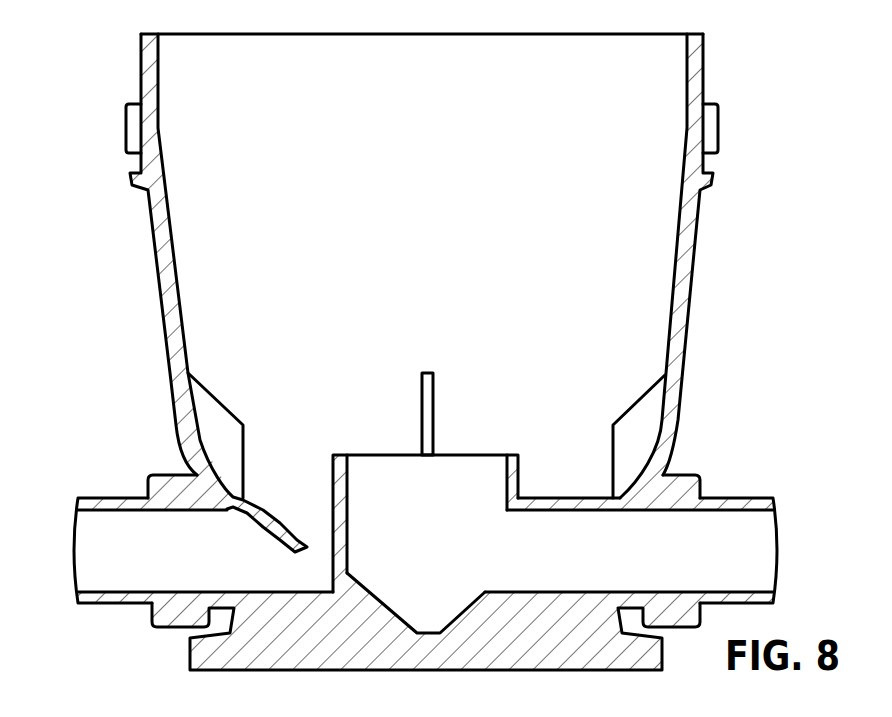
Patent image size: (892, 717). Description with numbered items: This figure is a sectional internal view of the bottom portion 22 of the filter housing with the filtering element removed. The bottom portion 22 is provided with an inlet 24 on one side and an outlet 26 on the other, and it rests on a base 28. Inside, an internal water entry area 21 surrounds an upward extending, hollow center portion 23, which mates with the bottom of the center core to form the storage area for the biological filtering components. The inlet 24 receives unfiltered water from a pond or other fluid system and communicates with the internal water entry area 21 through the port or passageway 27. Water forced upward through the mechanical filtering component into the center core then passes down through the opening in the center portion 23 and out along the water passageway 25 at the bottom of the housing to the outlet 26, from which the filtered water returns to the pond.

The internal water entry area 21 is at (300, 470).
The bottom portion 22 is at (88, 335).
The center portion 23 is at (514, 456).
The inlet 24 is at (73, 542).
The water passageway 25 is at (627, 565).
The outlet 26 is at (781, 544).
The passageway 27 is at (207, 565).
The base 28 is at (625, 669).